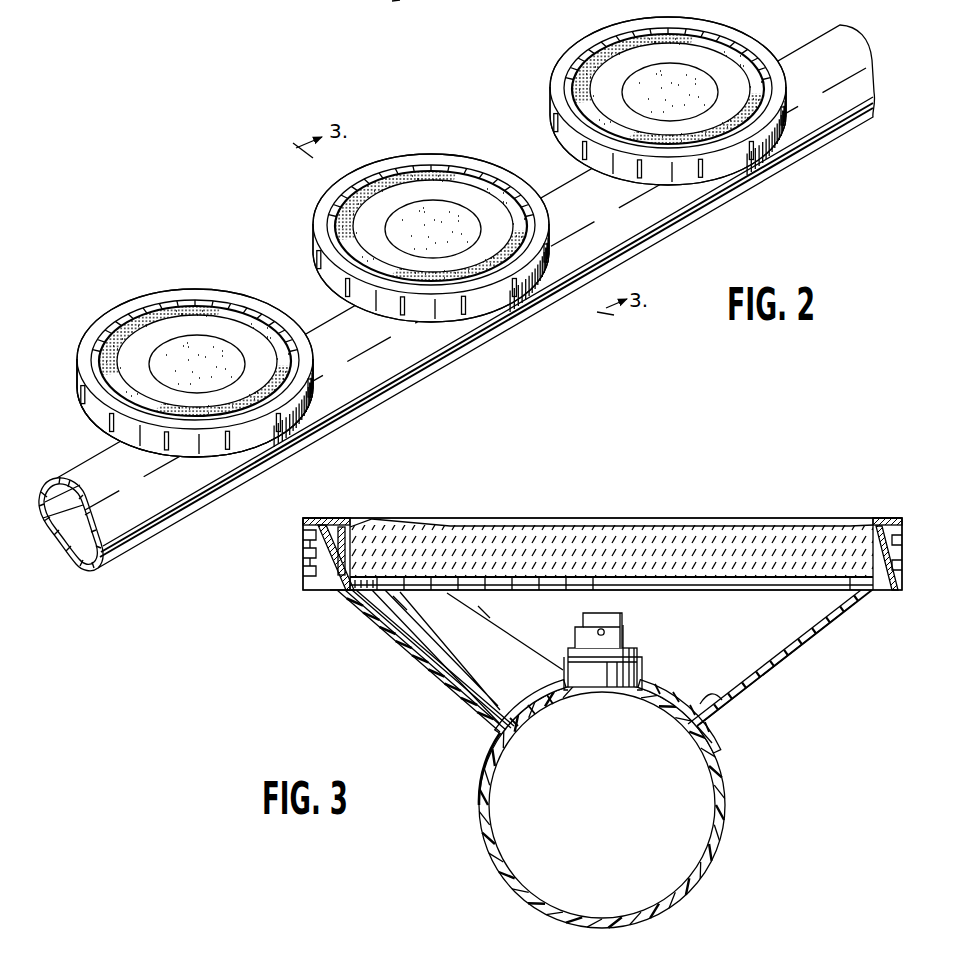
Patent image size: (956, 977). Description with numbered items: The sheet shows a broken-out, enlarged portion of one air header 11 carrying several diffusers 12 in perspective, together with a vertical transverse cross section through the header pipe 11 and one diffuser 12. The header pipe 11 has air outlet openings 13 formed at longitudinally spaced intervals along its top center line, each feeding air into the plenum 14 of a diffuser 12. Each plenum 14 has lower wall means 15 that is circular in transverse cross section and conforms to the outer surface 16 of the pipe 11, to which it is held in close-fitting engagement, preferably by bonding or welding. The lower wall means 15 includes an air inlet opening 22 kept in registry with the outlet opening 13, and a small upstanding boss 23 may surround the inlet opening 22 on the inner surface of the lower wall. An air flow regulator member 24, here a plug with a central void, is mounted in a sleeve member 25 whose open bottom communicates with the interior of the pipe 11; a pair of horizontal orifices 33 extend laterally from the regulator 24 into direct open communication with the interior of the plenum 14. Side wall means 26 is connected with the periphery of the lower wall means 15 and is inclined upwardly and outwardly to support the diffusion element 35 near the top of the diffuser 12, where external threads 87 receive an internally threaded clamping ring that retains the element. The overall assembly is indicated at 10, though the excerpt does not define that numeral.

In FIG. 2, the lighting assembly 10 is at (385, 4).
In FIG. 2, the header pipe 11 is at (851, 113).
In FIG. 3, the header pipe 11 is at (726, 838).
In FIG. 2, the diffuser 12 is at (172, 290).
In FIG. 3, the diffuser 12 is at (630, 507).
In FIG. 3, the air outlet opening 13 is at (563, 692).
In FIG. 3, the plenum 14 is at (412, 672).
In FIG. 3, the lower wall means 15 is at (722, 706).
In FIG. 3, the outer surface 16 is at (689, 690).
In FIG. 3, the air inlet opening 22 is at (565, 670).
In FIG. 3, the upstanding boss 23 is at (641, 672).
In FIG. 3, the air flow regulator member 24 is at (597, 613).
In FIG. 3, the sleeve member 25 is at (592, 676).
In FIG. 3, the side wall means 26 is at (803, 648).
In FIG. 3, the horizontal orifices 33 is at (606, 633).
In FIG. 3, the diffusion element 35 is at (753, 582).
In FIG. 2, the bezel ring 87 is at (286, 424).
In FIG. 3, the bezel ring 87 is at (301, 561).